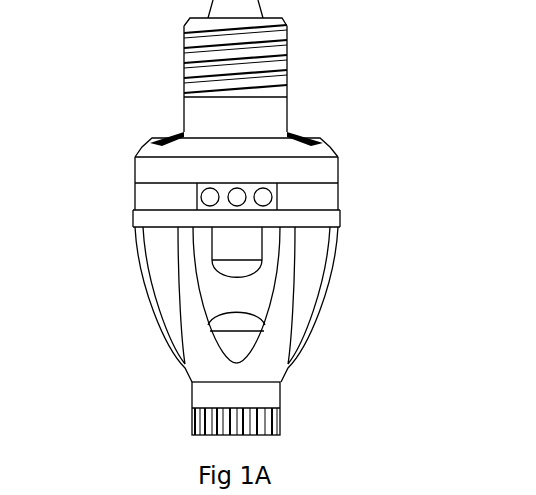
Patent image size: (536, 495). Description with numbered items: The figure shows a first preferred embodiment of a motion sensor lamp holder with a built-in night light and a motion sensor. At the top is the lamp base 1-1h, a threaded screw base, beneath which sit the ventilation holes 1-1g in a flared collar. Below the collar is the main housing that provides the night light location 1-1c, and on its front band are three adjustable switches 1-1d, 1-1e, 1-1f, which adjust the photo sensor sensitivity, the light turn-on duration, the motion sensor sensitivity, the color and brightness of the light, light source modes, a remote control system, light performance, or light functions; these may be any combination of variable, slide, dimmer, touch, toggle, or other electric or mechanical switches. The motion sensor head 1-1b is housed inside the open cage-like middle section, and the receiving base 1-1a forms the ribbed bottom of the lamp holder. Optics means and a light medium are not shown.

The receiving base 1-1a is at (232, 397).
The motion sensor head 1-1b is at (235, 245).
The night light location 1-1c is at (163, 197).
The adjustable switch 1-1d is at (215, 183).
The adjustable switch 1-1e is at (237, 183).
The adjustable switch 1-1f is at (263, 197).
The ventilation holes 1-1g is at (177, 133).
The lamp base 1-1h is at (183, 50).